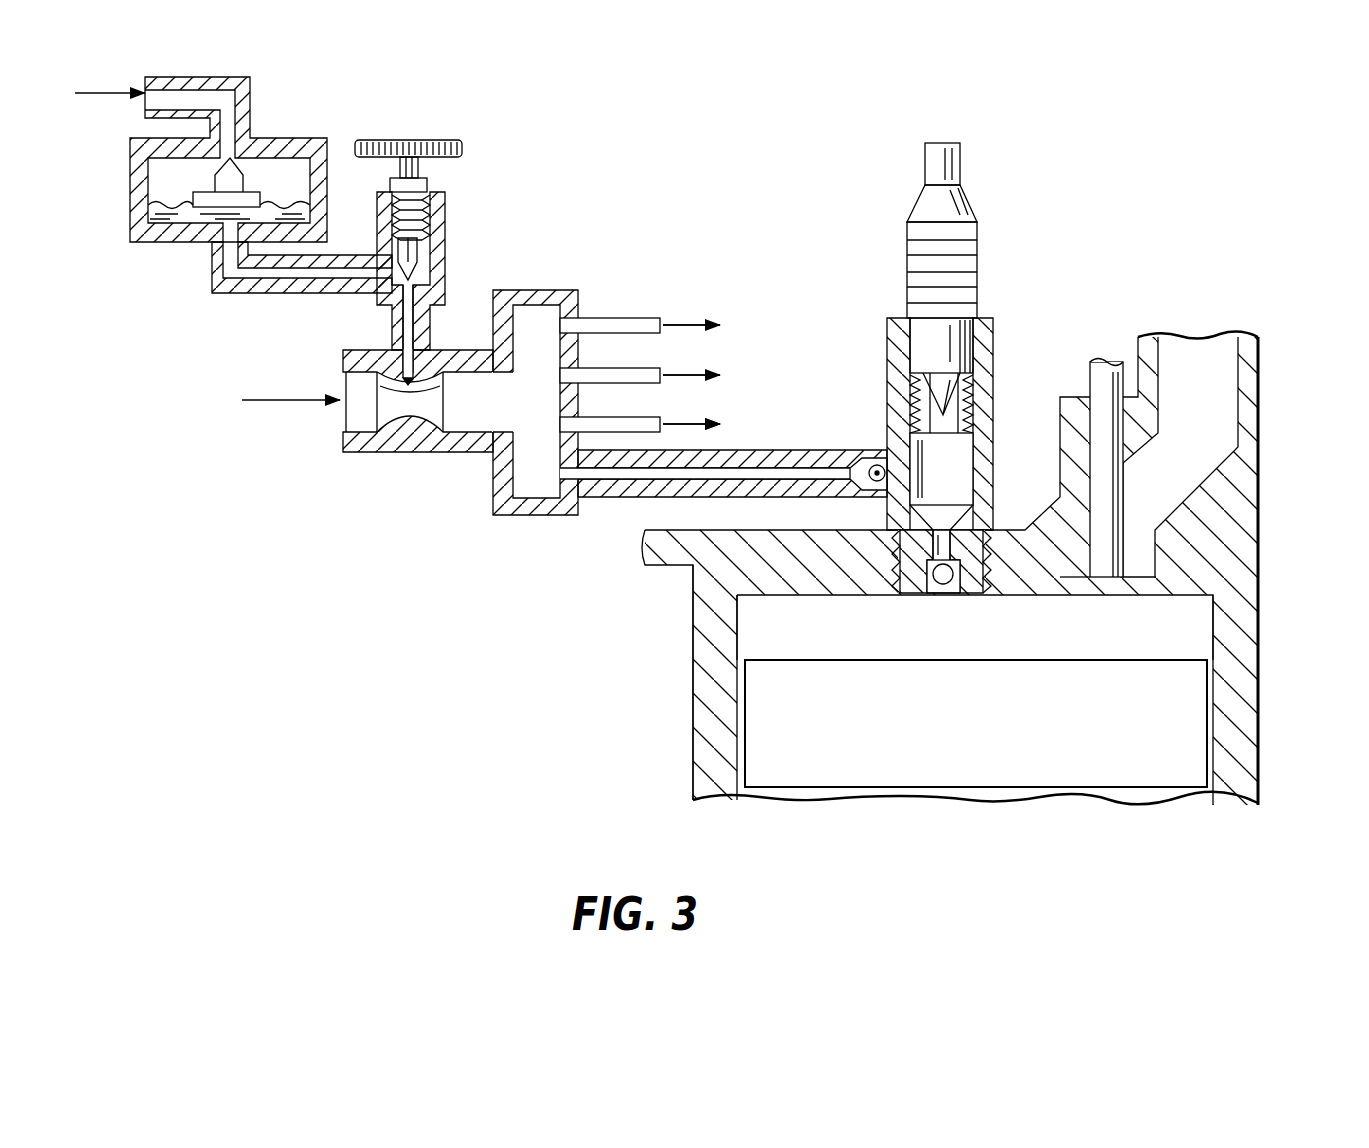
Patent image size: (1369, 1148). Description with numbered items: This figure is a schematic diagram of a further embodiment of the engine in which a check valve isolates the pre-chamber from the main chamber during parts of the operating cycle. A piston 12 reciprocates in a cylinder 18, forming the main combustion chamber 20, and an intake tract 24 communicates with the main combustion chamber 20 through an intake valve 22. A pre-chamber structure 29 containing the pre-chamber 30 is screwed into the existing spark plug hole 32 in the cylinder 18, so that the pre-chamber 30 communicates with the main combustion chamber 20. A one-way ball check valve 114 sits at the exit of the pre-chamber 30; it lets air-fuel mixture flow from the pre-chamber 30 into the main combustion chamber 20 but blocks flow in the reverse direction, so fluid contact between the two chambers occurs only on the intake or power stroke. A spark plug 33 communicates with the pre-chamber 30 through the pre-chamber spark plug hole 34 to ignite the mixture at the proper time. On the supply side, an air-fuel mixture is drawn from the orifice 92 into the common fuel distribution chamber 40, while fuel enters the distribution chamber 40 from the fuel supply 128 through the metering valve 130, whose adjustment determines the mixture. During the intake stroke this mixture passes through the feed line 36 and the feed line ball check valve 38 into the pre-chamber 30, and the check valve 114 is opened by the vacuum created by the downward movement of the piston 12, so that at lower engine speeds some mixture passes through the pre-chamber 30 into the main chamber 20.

The piston 12 is at (945, 732).
The cylinder 18 is at (1225, 645).
The main combustion chamber 20 is at (1168, 634).
The intake valve 22 is at (1105, 503).
The intake tract 24 is at (1212, 395).
The pre-chamber structure 29 is at (993, 395).
The pre-chamber 30 is at (960, 493).
The existing spark plug hole 32 is at (915, 598).
The spark plug 33 is at (970, 208).
The pre-chamber spark plug hole 34 is at (993, 425).
The feed line 36 is at (620, 330).
The feed line ball check valve 38 is at (877, 465).
The common fuel distribution chamber 40 is at (532, 336).
The orifice 92 is at (327, 440).
The one-way ball check valve 114 is at (948, 585).
The fuel supply 128 is at (318, 138).
The metering valve 130 is at (428, 186).